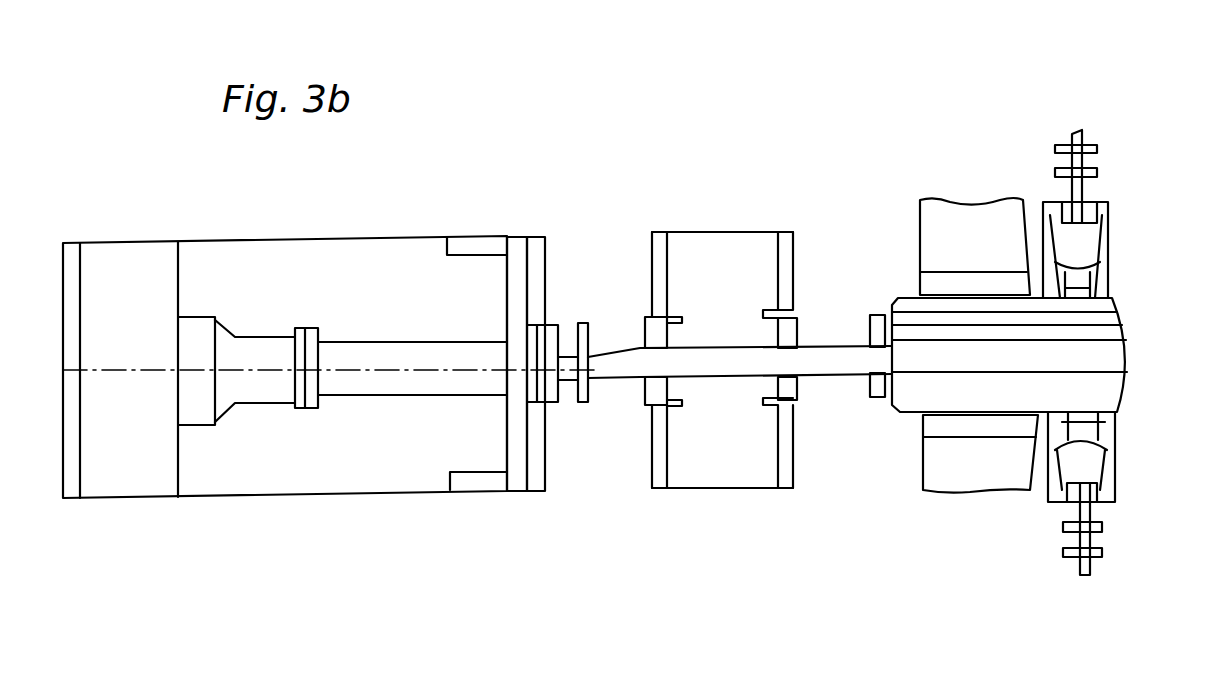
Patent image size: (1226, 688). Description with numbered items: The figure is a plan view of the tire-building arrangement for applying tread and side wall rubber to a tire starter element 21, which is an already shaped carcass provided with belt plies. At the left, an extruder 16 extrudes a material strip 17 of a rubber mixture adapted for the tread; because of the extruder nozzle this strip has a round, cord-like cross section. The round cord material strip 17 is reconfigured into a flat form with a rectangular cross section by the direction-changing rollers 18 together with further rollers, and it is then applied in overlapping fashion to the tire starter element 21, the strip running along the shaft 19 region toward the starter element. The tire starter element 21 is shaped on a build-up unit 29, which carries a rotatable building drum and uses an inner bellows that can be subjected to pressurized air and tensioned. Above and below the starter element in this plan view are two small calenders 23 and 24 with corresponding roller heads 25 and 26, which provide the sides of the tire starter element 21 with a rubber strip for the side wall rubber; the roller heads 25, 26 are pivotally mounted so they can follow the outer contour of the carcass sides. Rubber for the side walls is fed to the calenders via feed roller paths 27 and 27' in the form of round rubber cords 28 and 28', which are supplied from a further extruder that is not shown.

The extruder 16 is at (195, 340).
The material strip 17 is at (580, 405).
The direction-changing rollers 18 is at (643, 333).
The drive shaft 19 is at (827, 360).
The tire starter element 21 is at (922, 387).
The small calender 23 is at (1113, 243).
The small calender 24 is at (1115, 450).
The roller head 25 is at (1083, 293).
The roller head 26 is at (1085, 420).
The feed roller path 27 is at (1123, 148).
The feed roller path 27' is at (1136, 563).
The round rubber cord 28 is at (1124, 129).
The round rubber cord 28' is at (1116, 563).
The build-up unit 29 is at (983, 460).